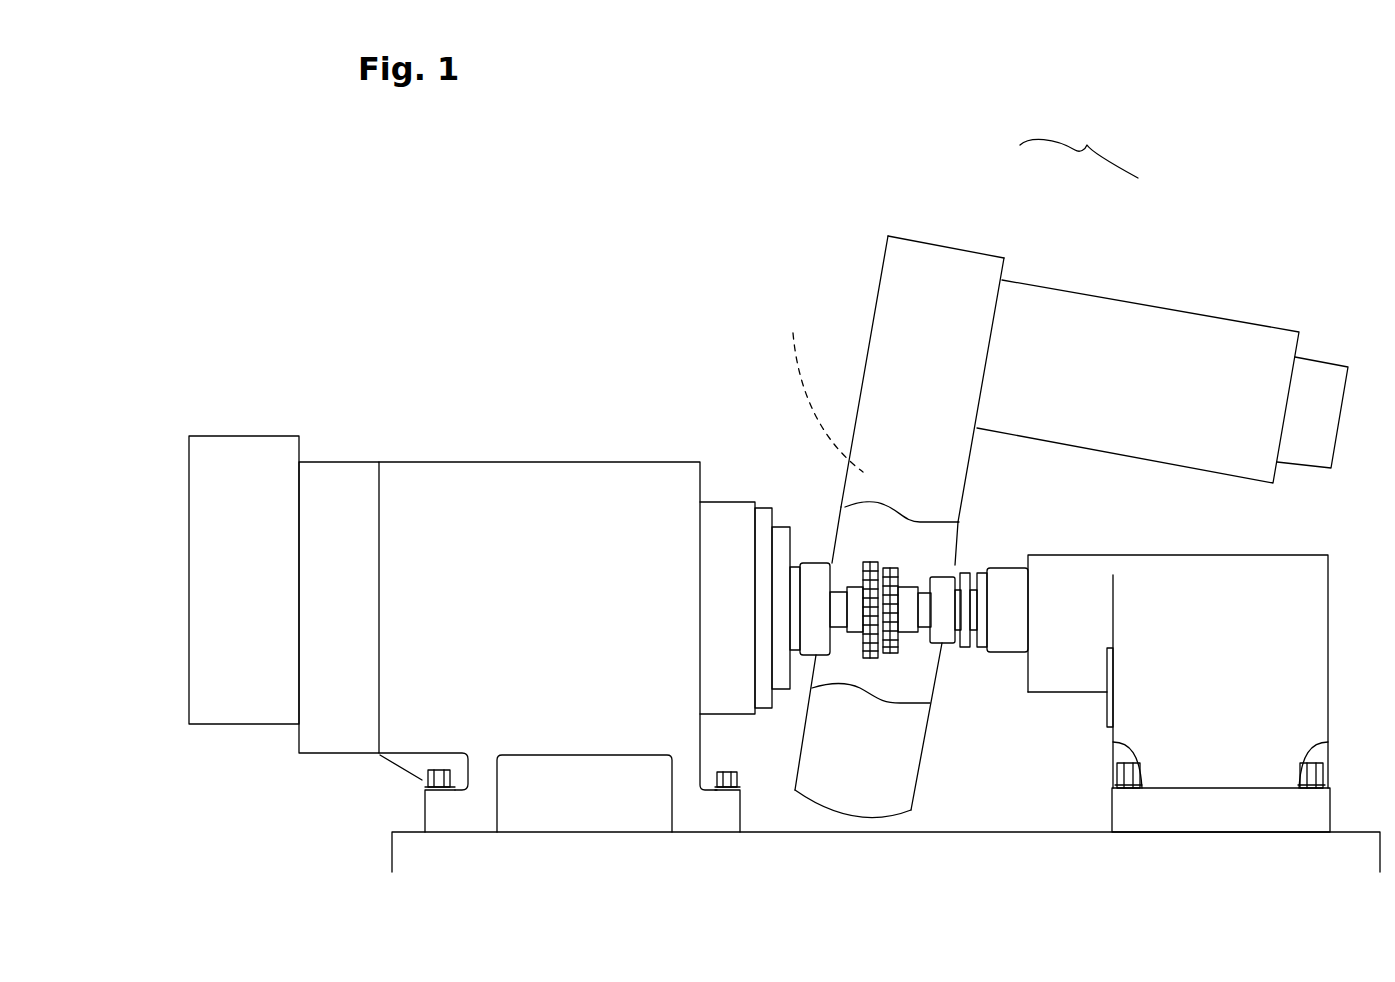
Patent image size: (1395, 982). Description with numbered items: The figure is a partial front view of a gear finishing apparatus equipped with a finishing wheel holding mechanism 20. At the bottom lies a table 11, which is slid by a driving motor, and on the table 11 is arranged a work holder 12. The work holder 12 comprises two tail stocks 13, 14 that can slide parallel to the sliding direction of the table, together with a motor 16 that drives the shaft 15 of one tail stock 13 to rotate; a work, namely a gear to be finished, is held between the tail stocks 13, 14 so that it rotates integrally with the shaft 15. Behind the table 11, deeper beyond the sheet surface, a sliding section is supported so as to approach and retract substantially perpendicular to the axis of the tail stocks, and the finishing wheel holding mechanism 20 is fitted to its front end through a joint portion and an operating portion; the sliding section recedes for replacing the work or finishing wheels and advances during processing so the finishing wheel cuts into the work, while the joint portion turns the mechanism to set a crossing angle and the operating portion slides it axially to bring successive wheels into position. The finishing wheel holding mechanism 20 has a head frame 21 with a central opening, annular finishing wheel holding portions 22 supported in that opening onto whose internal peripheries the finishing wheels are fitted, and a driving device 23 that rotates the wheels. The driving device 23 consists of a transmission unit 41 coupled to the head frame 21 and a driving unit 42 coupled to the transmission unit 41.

The table 11 is at (896, 858).
The work holder 12 is at (452, 396).
The tail stock 13 is at (546, 462).
The tail stock 14 is at (1285, 551).
The shaft 15 is at (836, 568).
The motor 16 is at (243, 436).
The finishing wheel holding mechanism 20 is at (941, 205).
The head frame 21 is at (856, 432).
The finishing wheel holding portion 22 is at (819, 389).
The driving device 23 is at (1079, 148).
The transmission unit 41 is at (953, 246).
The driving unit 42 is at (1082, 293).